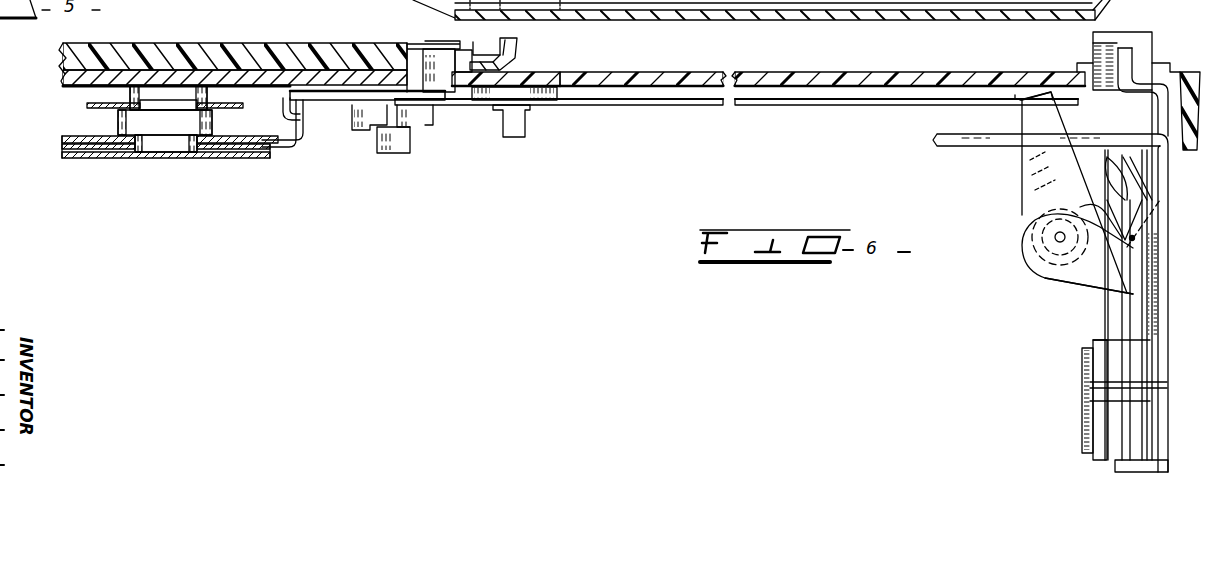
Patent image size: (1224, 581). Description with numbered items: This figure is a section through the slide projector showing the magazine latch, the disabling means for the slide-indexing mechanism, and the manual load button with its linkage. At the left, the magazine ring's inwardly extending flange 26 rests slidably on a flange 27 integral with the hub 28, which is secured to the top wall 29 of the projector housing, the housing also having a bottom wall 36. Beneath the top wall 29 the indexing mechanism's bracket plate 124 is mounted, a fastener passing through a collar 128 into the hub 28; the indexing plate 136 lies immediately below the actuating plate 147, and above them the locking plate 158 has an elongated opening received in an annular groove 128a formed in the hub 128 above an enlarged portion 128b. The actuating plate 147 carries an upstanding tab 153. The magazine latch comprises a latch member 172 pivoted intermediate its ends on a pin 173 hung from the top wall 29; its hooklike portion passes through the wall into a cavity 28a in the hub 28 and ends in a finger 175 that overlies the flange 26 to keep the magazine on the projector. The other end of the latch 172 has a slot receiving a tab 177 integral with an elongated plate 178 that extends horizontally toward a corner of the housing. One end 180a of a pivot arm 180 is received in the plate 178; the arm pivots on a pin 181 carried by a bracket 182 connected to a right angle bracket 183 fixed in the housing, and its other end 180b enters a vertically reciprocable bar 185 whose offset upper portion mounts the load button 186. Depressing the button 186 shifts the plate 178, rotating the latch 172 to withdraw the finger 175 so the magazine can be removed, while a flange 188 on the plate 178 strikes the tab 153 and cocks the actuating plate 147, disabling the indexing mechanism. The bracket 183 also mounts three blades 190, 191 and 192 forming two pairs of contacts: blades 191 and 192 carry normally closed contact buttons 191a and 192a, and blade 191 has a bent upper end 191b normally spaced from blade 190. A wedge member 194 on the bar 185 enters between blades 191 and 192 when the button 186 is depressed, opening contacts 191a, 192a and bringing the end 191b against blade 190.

The flange 26 is at (512, 57).
The flange 27 is at (522, 70).
The hub 28 is at (245, 43).
The cavity 28a is at (412, 44).
The top wall 29 is at (638, 72).
The bottom wall 36 is at (724, 18).
The bracket plate 124 is at (97, 159).
The collar 128 is at (175, 147).
The annular groove 128a is at (192, 108).
The enlarged portion 128b is at (118, 128).
The indexing plate 136 is at (62, 153).
The actuating plate 147 is at (62, 140).
The tab 153 is at (303, 140).
The locking plate 158 is at (100, 103).
The latch member 172 is at (370, 130).
The pin 173 is at (385, 153).
The finger 175 is at (475, 42).
The tab 177 is at (400, 128).
The plate 178 is at (612, 105).
The pivot arm 180 is at (1022, 180).
The end of pivot arm 180a is at (1037, 127).
The other end of pivot arm 180b is at (1098, 296).
The pin 181 is at (1057, 239).
The bracket 182 is at (1083, 280).
The right angle bracket 183 is at (937, 140).
The bar 185 is at (1150, 127).
The load button 186 is at (1135, 37).
The flange 188 is at (290, 112).
The blade 190 is at (1103, 322).
The blade 191 is at (1127, 462).
The contact button 191a is at (1080, 207).
The bent upper end 191b is at (1120, 185).
The blade 192 is at (1127, 460).
The contact button 192a is at (1040, 213).
The wedge member 194 is at (1153, 173).